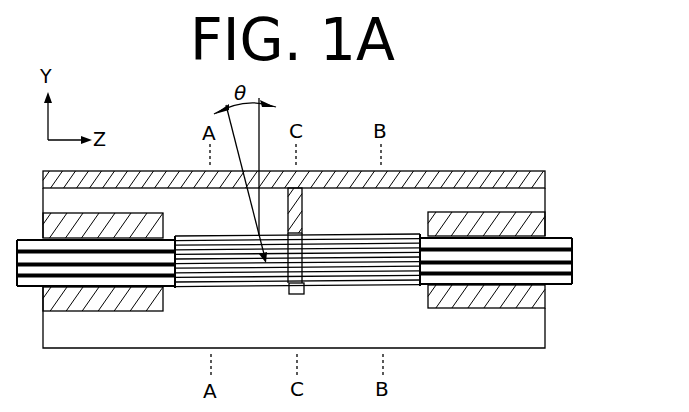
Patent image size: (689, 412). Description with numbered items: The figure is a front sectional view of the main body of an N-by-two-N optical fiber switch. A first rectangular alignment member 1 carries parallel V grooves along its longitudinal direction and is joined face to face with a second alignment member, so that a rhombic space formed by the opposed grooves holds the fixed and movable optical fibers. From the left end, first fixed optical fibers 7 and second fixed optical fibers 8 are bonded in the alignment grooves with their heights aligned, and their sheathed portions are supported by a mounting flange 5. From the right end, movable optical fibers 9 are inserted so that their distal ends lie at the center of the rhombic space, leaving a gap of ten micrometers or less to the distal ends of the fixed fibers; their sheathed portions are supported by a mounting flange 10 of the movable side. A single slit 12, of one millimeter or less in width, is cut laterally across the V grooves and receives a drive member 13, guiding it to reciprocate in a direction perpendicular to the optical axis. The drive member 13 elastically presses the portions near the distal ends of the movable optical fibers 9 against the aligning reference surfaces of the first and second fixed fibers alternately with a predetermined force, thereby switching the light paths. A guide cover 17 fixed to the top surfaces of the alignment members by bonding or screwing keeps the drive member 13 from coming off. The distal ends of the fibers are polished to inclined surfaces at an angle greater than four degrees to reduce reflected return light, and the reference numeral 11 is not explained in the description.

The first rectangular alignment member 1 is at (517, 327).
The mounting flange 5 is at (110, 311).
The first fixed optical fibers 7 is at (236, 206).
The second fixed optical fibers 8 is at (222, 288).
The movable optical fibers 9 is at (377, 285).
The mounting flange of the movable side 10 is at (480, 217).
The optical fiber ribbon 11 is at (560, 236).
The slit 12 is at (302, 187).
The drive member 13 is at (303, 226).
The guide cover 17 is at (430, 172).